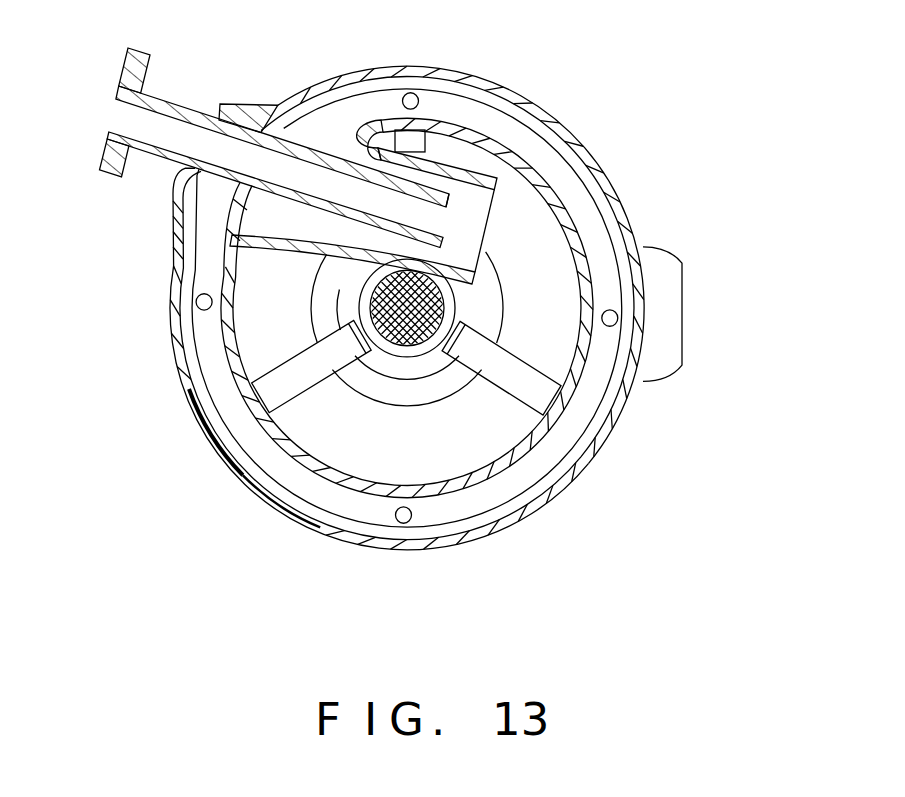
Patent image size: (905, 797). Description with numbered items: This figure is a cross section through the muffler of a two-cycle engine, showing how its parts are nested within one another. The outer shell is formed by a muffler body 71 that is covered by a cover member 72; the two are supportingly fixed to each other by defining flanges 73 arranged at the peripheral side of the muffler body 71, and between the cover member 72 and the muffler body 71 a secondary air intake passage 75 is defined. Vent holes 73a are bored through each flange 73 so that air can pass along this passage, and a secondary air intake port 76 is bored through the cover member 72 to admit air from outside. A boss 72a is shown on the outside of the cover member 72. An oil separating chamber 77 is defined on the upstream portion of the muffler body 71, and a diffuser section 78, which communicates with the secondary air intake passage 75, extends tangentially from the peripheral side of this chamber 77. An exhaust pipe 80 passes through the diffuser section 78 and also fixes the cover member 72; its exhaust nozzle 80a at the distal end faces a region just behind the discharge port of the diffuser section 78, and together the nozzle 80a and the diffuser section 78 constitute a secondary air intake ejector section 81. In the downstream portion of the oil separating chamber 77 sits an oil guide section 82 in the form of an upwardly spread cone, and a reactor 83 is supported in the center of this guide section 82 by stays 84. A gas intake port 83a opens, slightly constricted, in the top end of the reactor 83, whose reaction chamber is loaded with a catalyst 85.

The muffler body 71 is at (379, 368).
The cover member 72 is at (437, 264).
The casing boss 72a is at (700, 314).
The defining flanges 73 is at (374, 307).
The vent holes 73a is at (409, 313).
The secondary air intake passage 75 is at (168, 365).
The secondary air intake port 76 is at (401, 361).
The oil separating chamber 77 is at (487, 276).
The diffuser section 78 is at (470, 150).
The exhaust pipe 80 is at (187, 106).
The exhaust nozzle 80a is at (480, 245).
The secondary air intake ejector section 81 is at (472, 190).
The oil guide section 82 is at (252, 458).
The reactor 83 is at (407, 356).
The gas intake port 83a is at (304, 307).
The stays 84 is at (406, 246).
The catalyst 85 is at (435, 308).